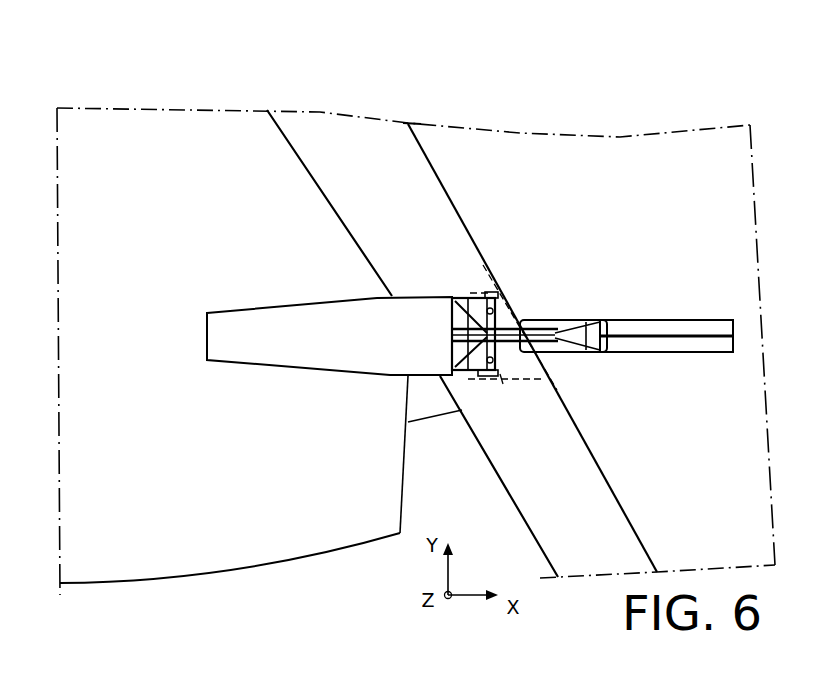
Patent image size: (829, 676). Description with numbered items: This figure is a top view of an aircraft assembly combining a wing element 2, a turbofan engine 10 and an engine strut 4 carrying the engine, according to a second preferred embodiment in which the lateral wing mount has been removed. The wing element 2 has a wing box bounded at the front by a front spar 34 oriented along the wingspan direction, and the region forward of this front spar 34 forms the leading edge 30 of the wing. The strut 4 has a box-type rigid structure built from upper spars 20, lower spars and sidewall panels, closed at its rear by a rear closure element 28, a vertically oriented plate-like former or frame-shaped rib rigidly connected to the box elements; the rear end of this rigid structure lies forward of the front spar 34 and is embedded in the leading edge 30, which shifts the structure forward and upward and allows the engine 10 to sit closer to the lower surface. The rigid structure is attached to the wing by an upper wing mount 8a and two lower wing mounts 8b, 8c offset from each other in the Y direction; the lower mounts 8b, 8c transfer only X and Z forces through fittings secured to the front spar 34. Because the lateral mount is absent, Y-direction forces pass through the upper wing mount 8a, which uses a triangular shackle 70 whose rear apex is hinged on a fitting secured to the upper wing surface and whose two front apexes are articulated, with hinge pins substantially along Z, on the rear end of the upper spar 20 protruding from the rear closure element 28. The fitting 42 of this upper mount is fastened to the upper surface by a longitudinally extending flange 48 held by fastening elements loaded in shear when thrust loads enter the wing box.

The wing element 2 is at (664, 182).
The engine strut 4 is at (330, 384).
The turbofan engine 10 is at (250, 563).
The upper spar 20 is at (300, 320).
The rear closure element 28 is at (441, 355).
The leading edge 30 is at (385, 176).
The front spar 34 is at (441, 181).
The fitting 42 is at (560, 323).
The flange 48 is at (686, 346).
The triangular shackle 70 is at (500, 345).
The upper wing mount 8a is at (666, 322).
The lower wing mount 8b is at (502, 376).
The lower wing mount 8c is at (480, 292).